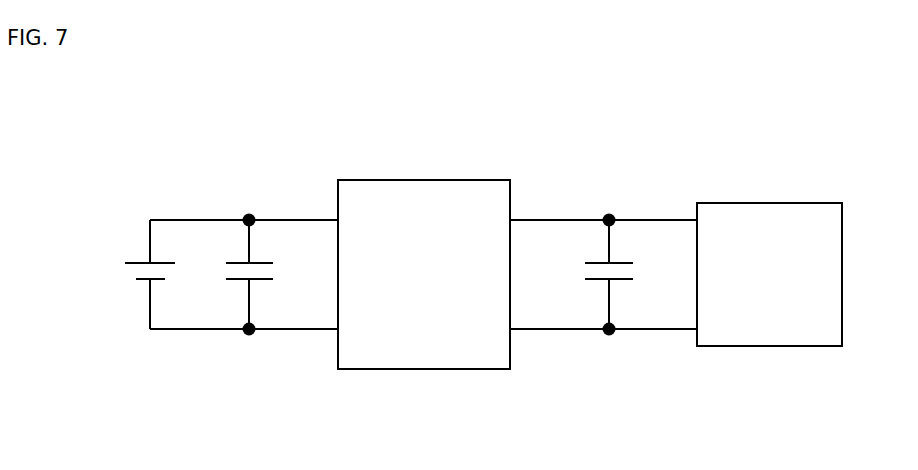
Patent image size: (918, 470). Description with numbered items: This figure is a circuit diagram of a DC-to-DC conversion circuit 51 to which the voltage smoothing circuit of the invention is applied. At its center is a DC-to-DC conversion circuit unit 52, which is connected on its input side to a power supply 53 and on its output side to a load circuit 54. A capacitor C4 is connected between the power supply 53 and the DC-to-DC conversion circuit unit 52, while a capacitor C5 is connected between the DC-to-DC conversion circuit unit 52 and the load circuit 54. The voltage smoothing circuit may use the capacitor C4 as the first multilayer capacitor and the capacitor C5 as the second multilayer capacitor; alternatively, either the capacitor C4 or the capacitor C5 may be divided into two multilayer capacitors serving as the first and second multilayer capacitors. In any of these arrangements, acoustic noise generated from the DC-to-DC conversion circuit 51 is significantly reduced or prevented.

The DC-to-DC conversion circuit 51 is at (186, 143).
The DC-to-DC conversion circuit unit 52 is at (430, 370).
The power supply 53 is at (137, 262).
The load circuit 54 is at (749, 347).
The capacitor C4 is at (259, 281).
The capacitor C5 is at (620, 281).